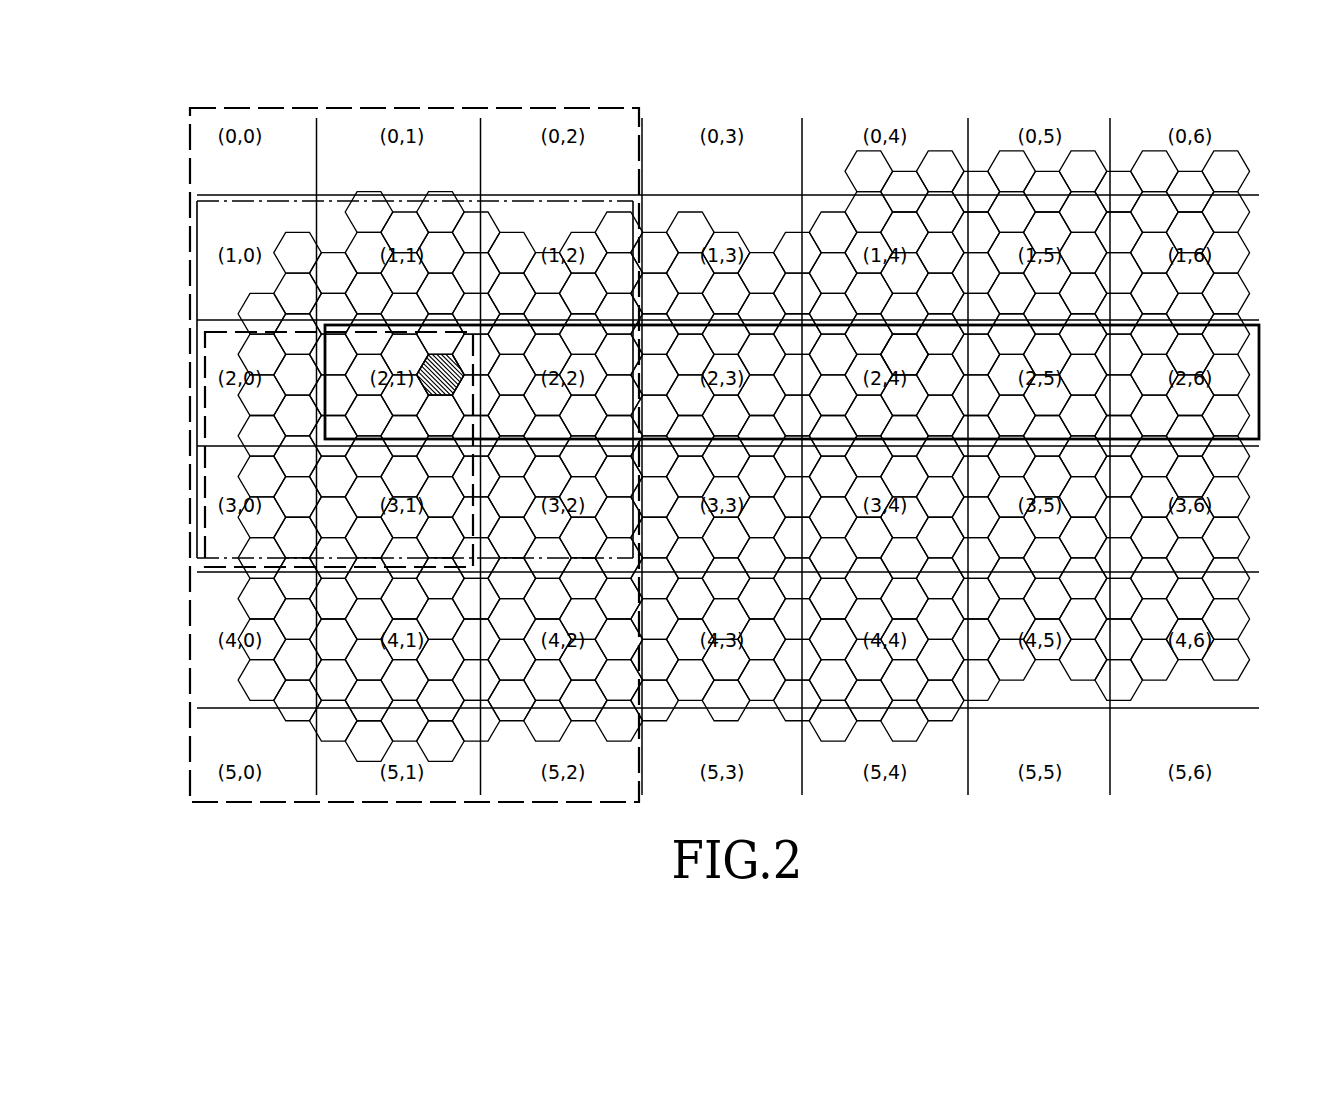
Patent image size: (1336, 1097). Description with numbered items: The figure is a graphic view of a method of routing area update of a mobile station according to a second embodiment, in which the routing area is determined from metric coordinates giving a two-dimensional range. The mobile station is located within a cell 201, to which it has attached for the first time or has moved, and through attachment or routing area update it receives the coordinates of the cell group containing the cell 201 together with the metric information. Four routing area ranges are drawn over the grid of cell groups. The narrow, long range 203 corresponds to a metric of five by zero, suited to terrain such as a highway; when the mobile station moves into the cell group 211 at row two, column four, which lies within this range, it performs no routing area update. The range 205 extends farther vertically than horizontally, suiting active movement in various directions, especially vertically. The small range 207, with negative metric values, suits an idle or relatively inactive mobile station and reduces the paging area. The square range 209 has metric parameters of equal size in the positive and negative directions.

The cell 201 is at (424, 360).
The routing area range 203 is at (1260, 382).
The routing area range 205 is at (410, 107).
The routing area range 207 is at (204, 478).
The routing area range 209 is at (197, 286).
The cell group at position [2, 4] 211 is at (886, 357).